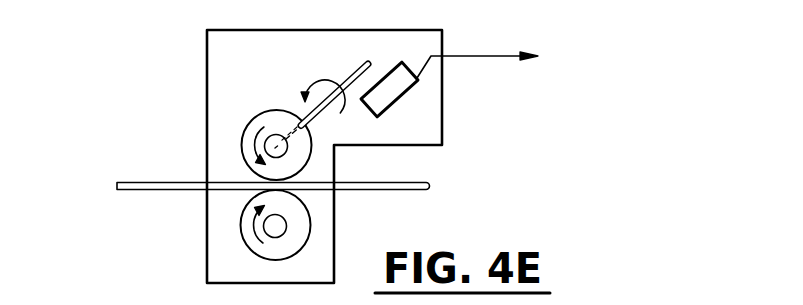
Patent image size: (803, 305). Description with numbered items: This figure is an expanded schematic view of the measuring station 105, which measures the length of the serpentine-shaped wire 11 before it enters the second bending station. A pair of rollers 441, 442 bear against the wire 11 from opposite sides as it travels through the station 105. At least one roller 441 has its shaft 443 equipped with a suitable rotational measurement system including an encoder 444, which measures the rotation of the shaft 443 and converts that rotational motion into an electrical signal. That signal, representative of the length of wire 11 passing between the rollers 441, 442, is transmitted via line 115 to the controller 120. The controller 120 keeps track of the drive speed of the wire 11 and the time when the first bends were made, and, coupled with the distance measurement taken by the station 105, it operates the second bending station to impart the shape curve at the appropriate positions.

The wire 11 is at (161, 181).
The measuring station 105 is at (153, 217).
The roller 441 is at (280, 110).
The roller 442 is at (243, 240).
The shaft 443 is at (358, 73).
The encoder 444 is at (390, 72).
The line 115 is at (468, 55).
The controller 120 is at (551, 103).